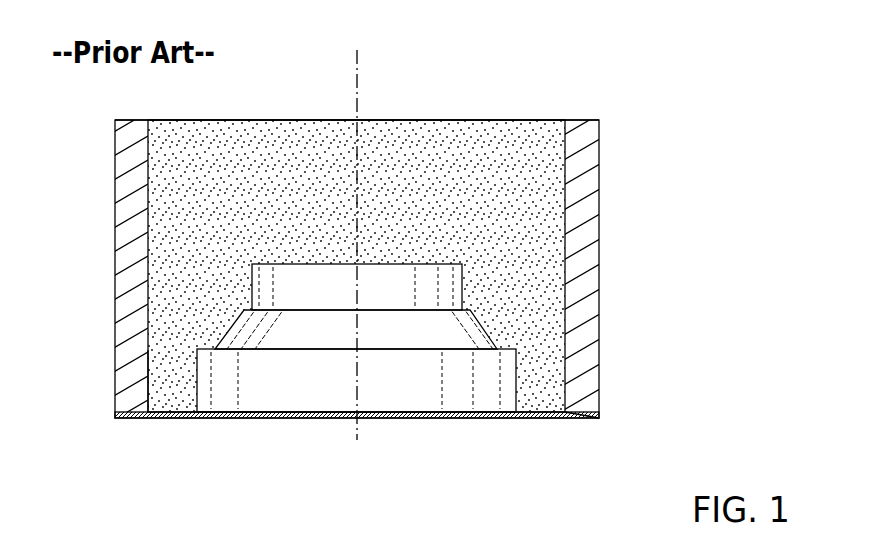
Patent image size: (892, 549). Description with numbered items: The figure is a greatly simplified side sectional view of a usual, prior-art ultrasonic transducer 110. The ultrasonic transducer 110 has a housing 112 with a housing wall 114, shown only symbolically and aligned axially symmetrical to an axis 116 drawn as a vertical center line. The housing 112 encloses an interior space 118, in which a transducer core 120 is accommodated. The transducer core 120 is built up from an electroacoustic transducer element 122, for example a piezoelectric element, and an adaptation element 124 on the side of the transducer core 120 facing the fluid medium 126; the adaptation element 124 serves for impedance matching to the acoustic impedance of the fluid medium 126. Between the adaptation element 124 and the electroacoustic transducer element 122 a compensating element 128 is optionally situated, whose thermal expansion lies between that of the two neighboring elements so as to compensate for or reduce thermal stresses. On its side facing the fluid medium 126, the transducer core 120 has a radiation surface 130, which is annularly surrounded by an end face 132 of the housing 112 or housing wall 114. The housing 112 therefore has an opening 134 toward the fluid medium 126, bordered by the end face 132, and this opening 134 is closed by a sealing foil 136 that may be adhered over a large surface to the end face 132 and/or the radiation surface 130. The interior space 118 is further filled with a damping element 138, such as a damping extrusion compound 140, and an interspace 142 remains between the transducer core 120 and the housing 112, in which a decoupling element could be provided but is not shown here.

The ultrasonic transducer 110 is at (520, 98).
The housing 112 is at (398, 266).
The housing wall 114 is at (596, 235).
The axis 116 is at (358, 70).
The interior space 118 is at (233, 168).
The transducer core 120 is at (493, 338).
The electroacoustic transducer element 122 is at (453, 282).
The adaptation element 124 is at (498, 383).
The fluid medium 126 is at (320, 495).
The compensating element 128 is at (462, 330).
The radiation surface 130 is at (413, 416).
The end face 132 is at (571, 419).
The opening 134 is at (235, 421).
The sealing foil 136 is at (535, 418).
The damping element 138 is at (517, 153).
The damping extrusion compound 140 is at (446, 139).
The interspace 142 is at (172, 386).